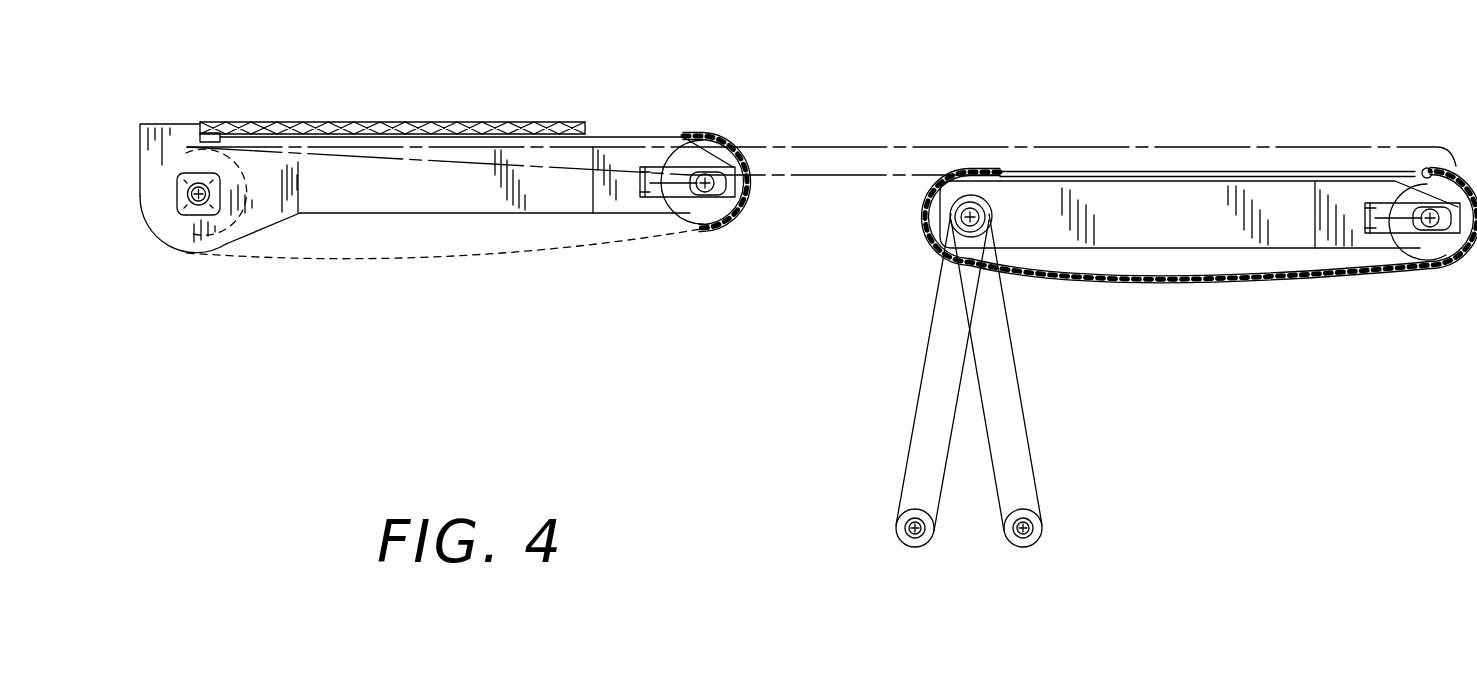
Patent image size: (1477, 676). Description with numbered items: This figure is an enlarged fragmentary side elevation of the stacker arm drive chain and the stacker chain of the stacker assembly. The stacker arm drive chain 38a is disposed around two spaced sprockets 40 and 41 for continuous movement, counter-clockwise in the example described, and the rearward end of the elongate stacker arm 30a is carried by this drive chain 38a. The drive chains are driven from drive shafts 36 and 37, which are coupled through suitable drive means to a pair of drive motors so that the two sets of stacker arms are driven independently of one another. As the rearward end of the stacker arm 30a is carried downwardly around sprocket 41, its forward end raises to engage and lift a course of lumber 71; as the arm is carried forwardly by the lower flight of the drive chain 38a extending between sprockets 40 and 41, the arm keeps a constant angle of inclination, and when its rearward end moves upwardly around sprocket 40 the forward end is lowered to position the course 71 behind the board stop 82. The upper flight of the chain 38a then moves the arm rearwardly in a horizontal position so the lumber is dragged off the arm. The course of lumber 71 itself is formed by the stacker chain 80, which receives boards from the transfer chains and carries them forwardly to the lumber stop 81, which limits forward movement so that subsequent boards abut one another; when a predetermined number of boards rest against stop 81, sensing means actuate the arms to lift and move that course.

The stacker arm 30a is at (828, 162).
The drive shaft 36 is at (913, 535).
The drive shaft 37 is at (1030, 528).
The stacker arm drive chain 38a is at (1227, 283).
The sprocket 40 is at (1003, 248).
The sprocket 41 is at (1400, 192).
The course of lumber 71 is at (425, 122).
The stacker chain 80 is at (487, 258).
The lumber stop 81 is at (200, 128).
The board stop 82 is at (137, 130).